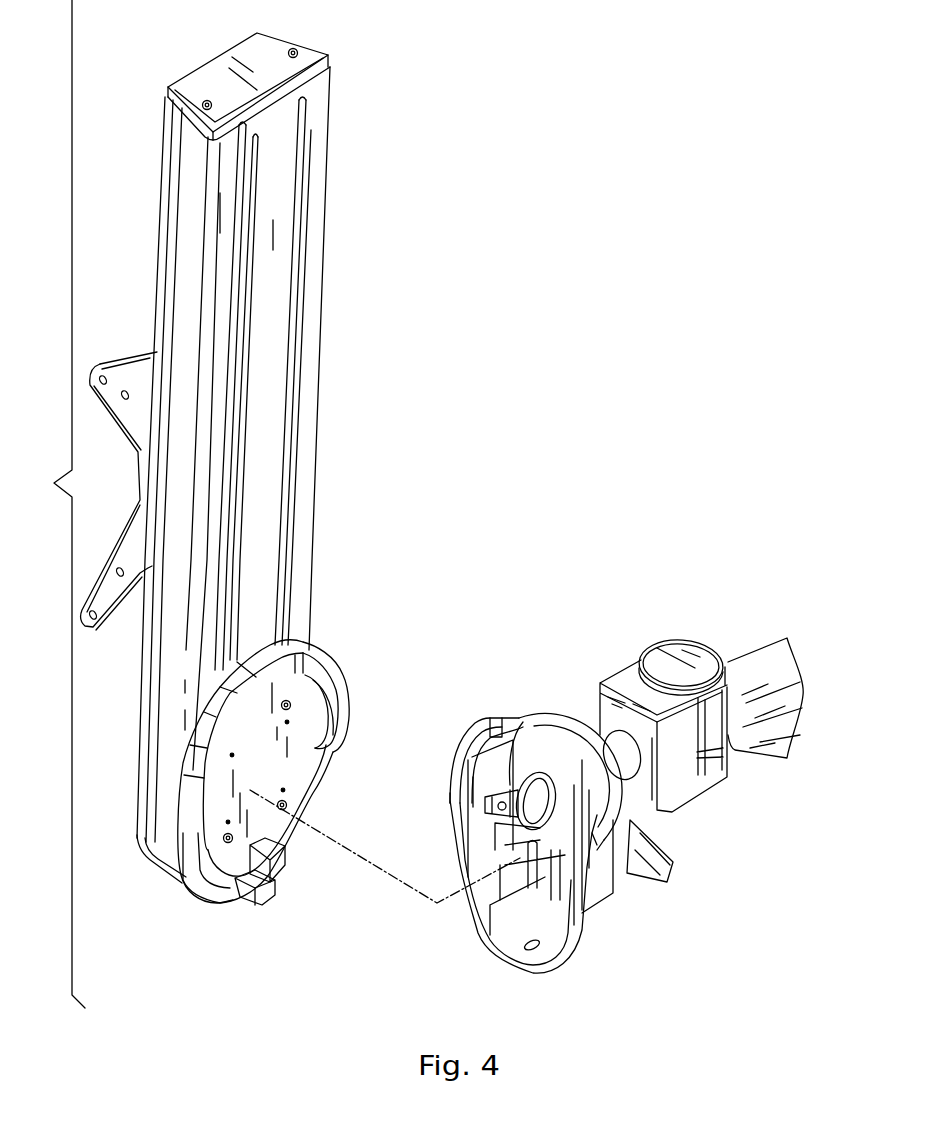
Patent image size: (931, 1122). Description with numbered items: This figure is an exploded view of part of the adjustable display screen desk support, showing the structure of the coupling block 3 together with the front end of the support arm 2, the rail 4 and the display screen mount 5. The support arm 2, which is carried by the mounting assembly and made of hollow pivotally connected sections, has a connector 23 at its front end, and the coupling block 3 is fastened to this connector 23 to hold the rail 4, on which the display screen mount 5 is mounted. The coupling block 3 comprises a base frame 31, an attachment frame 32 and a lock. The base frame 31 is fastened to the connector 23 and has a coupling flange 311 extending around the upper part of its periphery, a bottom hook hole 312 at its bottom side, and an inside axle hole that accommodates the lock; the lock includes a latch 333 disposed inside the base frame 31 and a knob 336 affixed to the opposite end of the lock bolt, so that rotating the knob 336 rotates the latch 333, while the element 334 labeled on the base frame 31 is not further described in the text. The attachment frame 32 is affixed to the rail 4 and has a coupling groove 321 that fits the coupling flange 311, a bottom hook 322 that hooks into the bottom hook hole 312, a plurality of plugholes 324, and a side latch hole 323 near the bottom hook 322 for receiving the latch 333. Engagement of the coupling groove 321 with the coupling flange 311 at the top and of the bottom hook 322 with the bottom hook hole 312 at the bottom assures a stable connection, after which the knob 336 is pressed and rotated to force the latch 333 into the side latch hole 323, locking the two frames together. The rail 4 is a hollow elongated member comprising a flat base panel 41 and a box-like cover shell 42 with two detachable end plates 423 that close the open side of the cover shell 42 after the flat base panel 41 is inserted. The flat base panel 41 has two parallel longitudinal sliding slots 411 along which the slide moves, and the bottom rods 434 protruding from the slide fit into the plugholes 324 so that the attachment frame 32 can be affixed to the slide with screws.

The support arm 2 is at (757, 660).
The coupling block 3 is at (535, 712).
The rail 4 is at (323, 165).
The display screen mount 5 is at (148, 373).
The connector 23 is at (597, 773).
The base frame 31 is at (600, 947).
The attachment frame 32 is at (313, 785).
The flat base panel 41 is at (265, 517).
The cover shell 42 is at (170, 207).
The coupling flange 311 is at (458, 748).
The bottom hook hole 312 is at (523, 947).
The coupling groove 321 is at (323, 715).
The bottom hook 322 is at (272, 898).
The side latch hole 323 is at (283, 860).
The plugholes 324 is at (288, 723).
The latch 333 is at (513, 885).
The right rim 334 is at (563, 907).
The knob 336 is at (663, 870).
The longitudinal sliding slots 411 is at (247, 180).
The end plates 423 is at (253, 70).
The bottom rods 434 is at (257, 772).